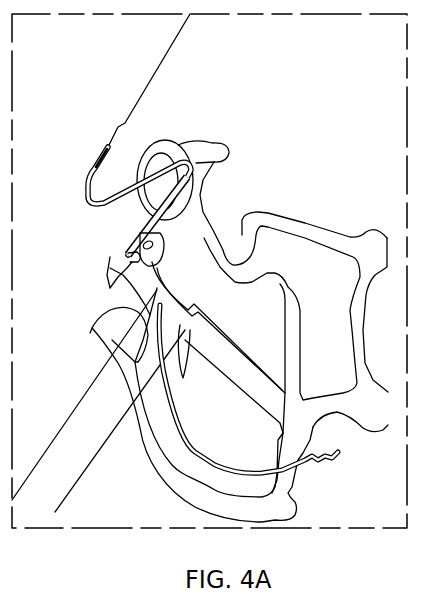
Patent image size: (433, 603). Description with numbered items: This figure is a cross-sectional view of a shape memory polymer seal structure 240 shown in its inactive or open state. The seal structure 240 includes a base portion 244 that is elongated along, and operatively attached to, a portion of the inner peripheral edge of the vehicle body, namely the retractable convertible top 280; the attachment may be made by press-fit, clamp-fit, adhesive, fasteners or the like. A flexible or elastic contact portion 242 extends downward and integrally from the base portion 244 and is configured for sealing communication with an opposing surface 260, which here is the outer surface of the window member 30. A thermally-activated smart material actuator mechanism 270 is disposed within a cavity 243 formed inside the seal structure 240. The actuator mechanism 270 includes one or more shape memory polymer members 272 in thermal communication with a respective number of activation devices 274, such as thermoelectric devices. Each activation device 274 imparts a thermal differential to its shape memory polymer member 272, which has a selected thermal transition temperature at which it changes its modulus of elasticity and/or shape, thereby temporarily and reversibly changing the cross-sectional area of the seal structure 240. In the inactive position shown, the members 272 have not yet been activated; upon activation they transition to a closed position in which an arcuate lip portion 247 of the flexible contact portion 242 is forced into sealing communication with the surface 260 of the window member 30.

The window member 30 is at (50, 440).
The shape memory polymer seal structure 240 is at (151, 256).
The flexible contact portion 242 is at (143, 244).
The cavity 243 is at (192, 230).
The base portion 244 is at (95, 163).
The arcuate lip portion 247 is at (110, 258).
The surface 260 is at (108, 316).
The thermally-activated smart material (TASM) actuator mechanism 270 is at (188, 256).
The shape memory polymer (SMP) member 272 is at (165, 250).
The activation device 274 is at (143, 238).
The retractable convertible top 280 is at (161, 64).